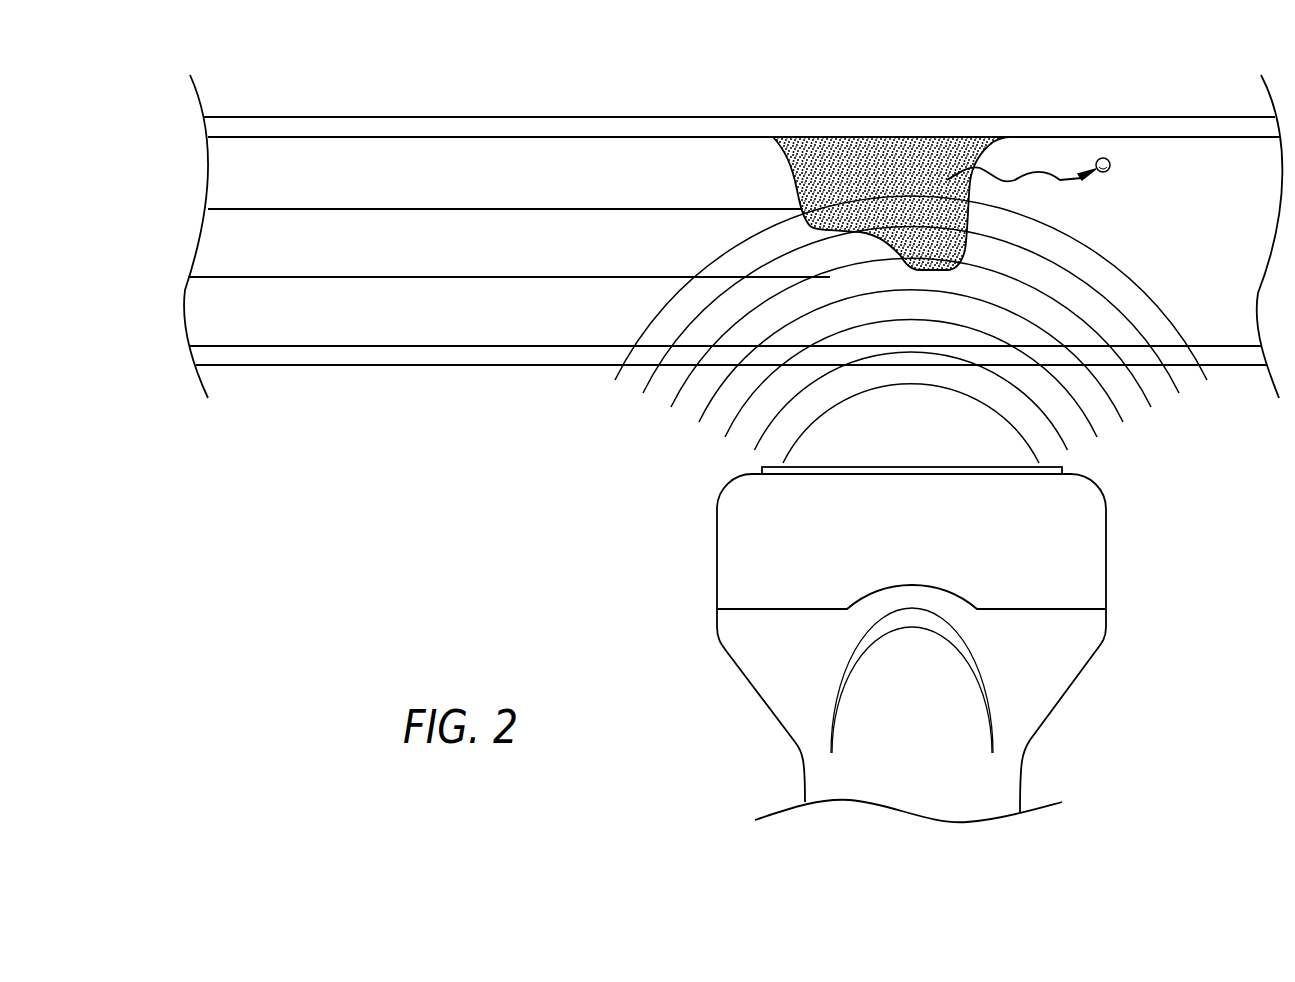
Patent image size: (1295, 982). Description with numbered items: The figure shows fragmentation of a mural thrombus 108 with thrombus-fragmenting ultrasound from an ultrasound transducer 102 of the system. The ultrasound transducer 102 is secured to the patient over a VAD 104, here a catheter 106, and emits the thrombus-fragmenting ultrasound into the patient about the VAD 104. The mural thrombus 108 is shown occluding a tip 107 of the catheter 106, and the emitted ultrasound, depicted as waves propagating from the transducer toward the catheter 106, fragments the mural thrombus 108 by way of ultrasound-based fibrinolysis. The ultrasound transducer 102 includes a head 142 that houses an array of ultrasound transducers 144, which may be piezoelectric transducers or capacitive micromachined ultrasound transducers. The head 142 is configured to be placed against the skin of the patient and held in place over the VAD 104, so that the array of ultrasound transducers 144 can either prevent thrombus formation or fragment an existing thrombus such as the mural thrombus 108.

The ultrasound transducer 102 is at (897, 640).
The VAD 104 is at (457, 198).
The catheter 106 is at (734, 241).
The tip 107 is at (848, 250).
The mural thrombus 108 is at (950, 180).
The head 142 is at (717, 540).
The array of ultrasound transducers 144 is at (1047, 468).